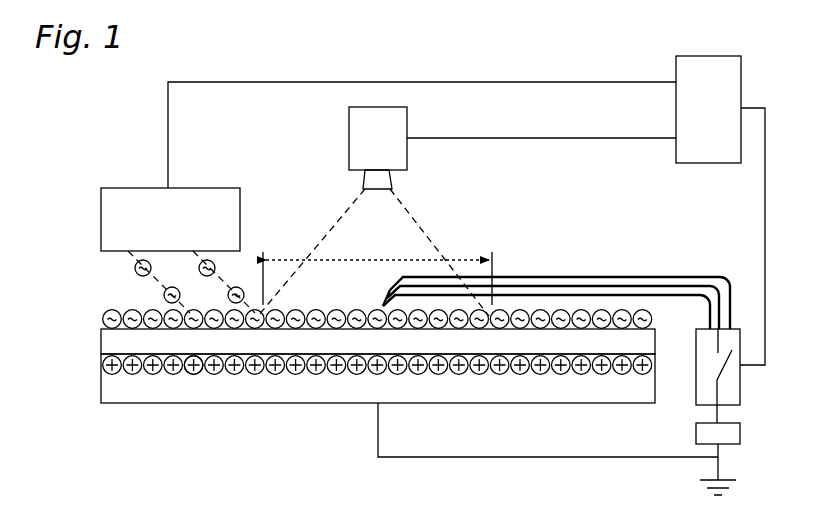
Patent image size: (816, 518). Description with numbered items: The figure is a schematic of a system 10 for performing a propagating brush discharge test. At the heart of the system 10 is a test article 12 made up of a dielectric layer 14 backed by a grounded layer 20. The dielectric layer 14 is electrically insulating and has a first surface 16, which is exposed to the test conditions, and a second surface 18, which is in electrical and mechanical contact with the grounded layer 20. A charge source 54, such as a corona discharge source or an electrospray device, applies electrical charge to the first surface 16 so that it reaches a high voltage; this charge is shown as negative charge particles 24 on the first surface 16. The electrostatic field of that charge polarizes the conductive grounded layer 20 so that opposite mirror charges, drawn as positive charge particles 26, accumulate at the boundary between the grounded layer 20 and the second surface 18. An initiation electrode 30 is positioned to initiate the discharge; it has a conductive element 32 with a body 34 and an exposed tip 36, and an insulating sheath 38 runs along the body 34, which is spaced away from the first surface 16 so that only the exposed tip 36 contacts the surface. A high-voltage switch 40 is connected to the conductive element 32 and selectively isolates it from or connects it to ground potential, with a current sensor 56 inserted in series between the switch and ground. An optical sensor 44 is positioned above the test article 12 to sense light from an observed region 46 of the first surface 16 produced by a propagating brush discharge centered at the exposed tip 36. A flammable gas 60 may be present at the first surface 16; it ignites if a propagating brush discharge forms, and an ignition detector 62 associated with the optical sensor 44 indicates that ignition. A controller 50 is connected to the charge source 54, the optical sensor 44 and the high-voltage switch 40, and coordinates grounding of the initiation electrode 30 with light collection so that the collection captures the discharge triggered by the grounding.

The system 10 is at (651, 49).
The test article 12 is at (70, 351).
The dielectric layer 14 is at (101, 342).
The first surface 16 is at (146, 316).
The second surface 18 is at (147, 362).
The grounded layer 20 is at (101, 387).
The charge particles 24 is at (257, 306).
The charge particles 26 is at (192, 372).
The initiation electrode 30 is at (528, 248).
The conductive element 32 is at (554, 276).
The body 34 is at (601, 284).
The exposed tip 36 is at (385, 299).
The insulating sheath 38 is at (662, 276).
The high-voltage switch 40 is at (740, 386).
The optical sensor 44 is at (378, 138).
The observed region 46 is at (376, 259).
The controller 50 is at (708, 109).
The charge source 54 is at (170, 219).
The current sensor 56 is at (696, 433).
The flammable gas 60 is at (310, 278).
The ignition detector 62 is at (349, 150).